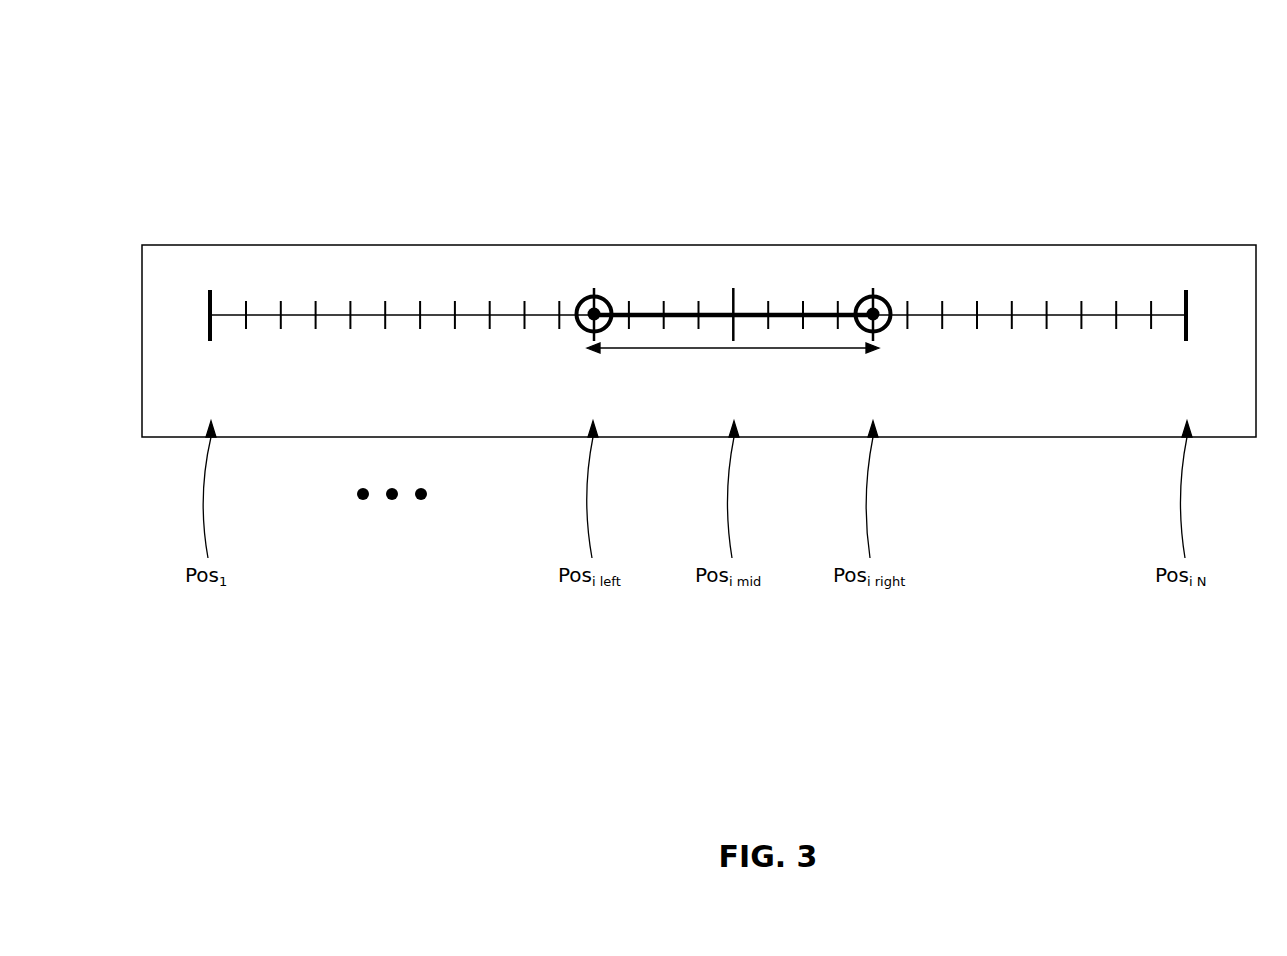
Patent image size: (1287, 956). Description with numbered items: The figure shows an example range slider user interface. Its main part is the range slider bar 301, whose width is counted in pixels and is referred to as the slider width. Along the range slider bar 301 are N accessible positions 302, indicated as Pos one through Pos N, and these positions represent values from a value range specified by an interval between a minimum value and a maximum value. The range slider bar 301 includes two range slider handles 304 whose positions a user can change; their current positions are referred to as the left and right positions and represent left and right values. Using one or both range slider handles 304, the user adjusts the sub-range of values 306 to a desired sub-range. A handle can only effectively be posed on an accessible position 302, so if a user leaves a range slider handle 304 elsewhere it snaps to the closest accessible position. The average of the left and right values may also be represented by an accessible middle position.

The range slider bar 301 is at (699, 220).
The accessible positions 302 is at (214, 300).
The range slider handles 304 is at (649, 197).
The sub-range of values 306 is at (733, 501).